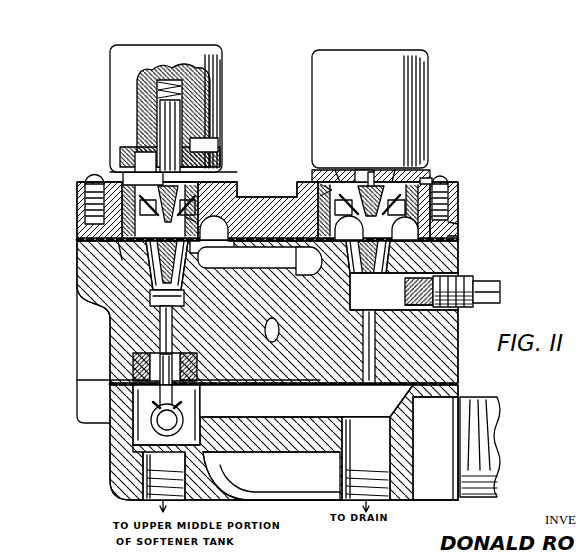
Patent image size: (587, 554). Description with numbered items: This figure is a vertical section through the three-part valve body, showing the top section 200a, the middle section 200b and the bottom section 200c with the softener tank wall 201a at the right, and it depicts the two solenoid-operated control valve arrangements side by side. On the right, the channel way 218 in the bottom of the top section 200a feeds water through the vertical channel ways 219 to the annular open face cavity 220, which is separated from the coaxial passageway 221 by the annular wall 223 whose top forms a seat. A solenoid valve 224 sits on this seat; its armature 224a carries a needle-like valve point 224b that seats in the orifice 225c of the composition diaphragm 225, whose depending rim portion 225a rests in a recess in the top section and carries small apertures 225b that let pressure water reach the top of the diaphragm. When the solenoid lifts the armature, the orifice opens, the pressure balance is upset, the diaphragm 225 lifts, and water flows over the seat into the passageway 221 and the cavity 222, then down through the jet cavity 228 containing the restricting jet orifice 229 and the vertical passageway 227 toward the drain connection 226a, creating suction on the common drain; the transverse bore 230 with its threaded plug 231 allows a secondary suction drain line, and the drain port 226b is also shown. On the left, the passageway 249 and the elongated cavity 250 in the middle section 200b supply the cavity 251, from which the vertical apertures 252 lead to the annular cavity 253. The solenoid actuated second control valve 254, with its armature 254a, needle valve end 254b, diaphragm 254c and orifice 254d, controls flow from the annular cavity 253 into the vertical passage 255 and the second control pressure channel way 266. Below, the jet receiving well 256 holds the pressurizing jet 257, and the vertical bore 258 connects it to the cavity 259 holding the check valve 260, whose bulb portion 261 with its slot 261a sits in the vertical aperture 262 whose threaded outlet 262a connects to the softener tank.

The top section 200a is at (72, 229).
The middle section 200b is at (72, 289).
The bottom section 200c is at (72, 398).
The softener tank wall 201a is at (499, 434).
The channel way 218 is at (450, 238).
The vertical channel ways 219 is at (408, 241).
The annular open face cavity 220 is at (320, 216).
The coaxial passageway 221 is at (373, 184).
The cavity 222 is at (336, 236).
The annular wall 223 is at (335, 225).
The solenoid valve 224 is at (338, 48).
The armature 224a is at (377, 170).
The needle-like valve point 224b is at (352, 170).
The composition diaphragm 225 is at (320, 178).
The depending rim portion 225a is at (449, 206).
The small apertures 225b is at (420, 178).
The orifice 225c is at (334, 175).
The vertical drain connection 226a is at (340, 440).
The drain port 226b is at (280, 328).
The vertical passageway 227 is at (375, 357).
The jet cavity 228 is at (376, 262).
The restricting jet orifice 229 is at (350, 265).
The transverse bore 230 is at (412, 306).
The threaded plug 231 is at (470, 278).
The passageway 249 is at (290, 270).
The elongated cavity 250 is at (246, 268).
The cavity 251 is at (214, 235).
The vertical apertures 252 is at (205, 223).
The annular cavity 253 is at (84, 207).
The solenoid actuated second control valve 254 is at (205, 43).
The armature 254a is at (160, 125).
The needle valve end 254b is at (166, 180).
The diaphragm 254c is at (140, 84).
The orifice 254d is at (168, 224).
The vertical passage 255 is at (143, 226).
The jet receiving well 256 is at (150, 293).
The pressurizing jet 257 is at (150, 272).
The vertical bore 258 is at (159, 318).
The cavity 259 is at (136, 361).
The check valve 260 is at (136, 378).
The bulb portion 261 is at (150, 401).
The slot 261a is at (183, 422).
The vertical aperture 262 is at (133, 432).
The threaded outlet 262a is at (147, 503).
The second control pressure channel way 266 is at (115, 250).